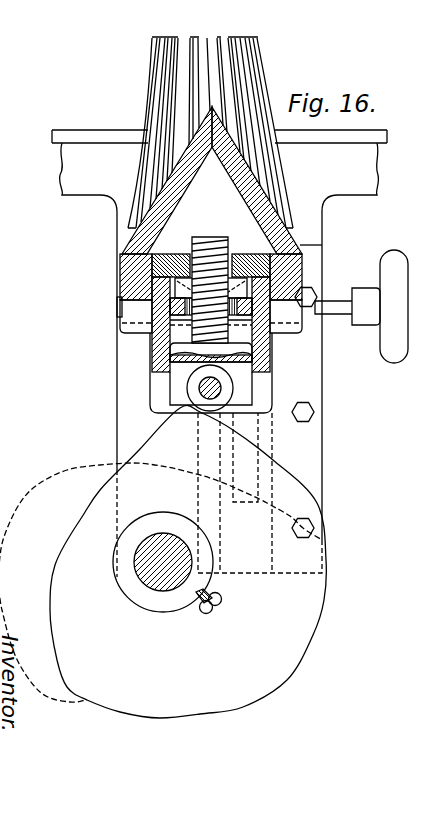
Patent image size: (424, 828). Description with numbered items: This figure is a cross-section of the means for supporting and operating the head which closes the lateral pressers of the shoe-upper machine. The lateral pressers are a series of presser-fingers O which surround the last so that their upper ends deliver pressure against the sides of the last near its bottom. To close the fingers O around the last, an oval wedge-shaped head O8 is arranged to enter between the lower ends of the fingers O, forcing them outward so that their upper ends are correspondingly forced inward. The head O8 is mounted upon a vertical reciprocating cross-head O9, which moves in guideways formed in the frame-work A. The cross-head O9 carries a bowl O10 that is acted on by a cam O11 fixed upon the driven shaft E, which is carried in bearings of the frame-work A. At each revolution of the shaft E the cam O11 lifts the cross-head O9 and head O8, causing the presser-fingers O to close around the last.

The presser-fingers O is at (148, 104).
The oval wedge-shaped head O8 is at (167, 210).
The vertical reciprocating cross-head O9 is at (270, 357).
The bowl O10 is at (232, 388).
The cam O11 is at (15, 504).
The frame-work A is at (107, 432).
The driven shaft E is at (137, 572).